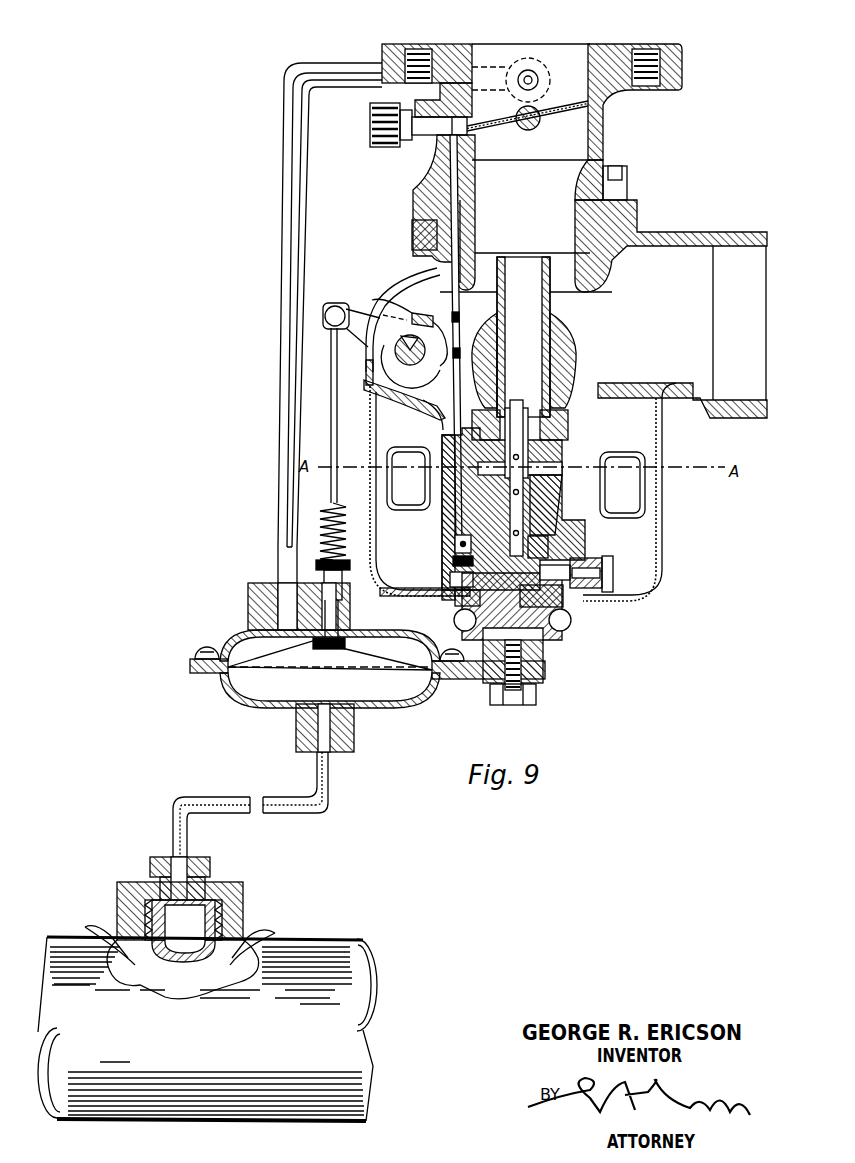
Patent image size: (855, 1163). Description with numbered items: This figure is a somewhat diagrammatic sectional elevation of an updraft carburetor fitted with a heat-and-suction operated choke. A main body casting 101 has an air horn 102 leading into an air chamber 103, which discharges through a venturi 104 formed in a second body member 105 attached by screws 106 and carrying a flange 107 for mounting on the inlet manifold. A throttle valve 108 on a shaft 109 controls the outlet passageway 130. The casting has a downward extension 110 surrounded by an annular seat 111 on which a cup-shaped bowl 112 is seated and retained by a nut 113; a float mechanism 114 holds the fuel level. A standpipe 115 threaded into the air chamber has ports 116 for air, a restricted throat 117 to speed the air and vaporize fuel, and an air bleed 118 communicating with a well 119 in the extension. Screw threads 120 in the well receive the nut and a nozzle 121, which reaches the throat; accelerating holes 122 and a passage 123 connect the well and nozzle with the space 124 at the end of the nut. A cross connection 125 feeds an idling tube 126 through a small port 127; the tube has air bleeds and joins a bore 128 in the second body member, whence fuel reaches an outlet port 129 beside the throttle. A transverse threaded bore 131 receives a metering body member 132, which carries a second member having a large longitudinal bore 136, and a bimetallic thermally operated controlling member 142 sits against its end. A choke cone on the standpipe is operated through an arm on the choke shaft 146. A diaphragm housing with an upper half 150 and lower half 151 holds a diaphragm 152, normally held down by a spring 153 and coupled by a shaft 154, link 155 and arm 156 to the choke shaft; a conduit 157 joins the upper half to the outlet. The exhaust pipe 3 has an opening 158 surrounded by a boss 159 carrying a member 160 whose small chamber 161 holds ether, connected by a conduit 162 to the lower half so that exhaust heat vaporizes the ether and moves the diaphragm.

The exhaust manifold 3 is at (293, 940).
The main body casting 101 is at (648, 233).
The air horn 102 is at (753, 307).
The air chamber 103 is at (662, 325).
The venturi 104 is at (482, 224).
The second body member 105 is at (602, 136).
The screws 106 is at (626, 186).
The flange 107 is at (680, 52).
The throttle valve 108 is at (562, 113).
The throttle shaft 109 is at (520, 128).
The downward extension 110 is at (443, 433).
The annular seat 111 is at (668, 396).
The cup-shaped bowl 112 is at (662, 547).
The nut 113 is at (546, 626).
The float mechanism 114 is at (516, 482).
The standpipe 115 is at (552, 312).
The ports 116 is at (560, 432).
The restricted throat 117 is at (532, 405).
The air bleed 118 is at (553, 456).
The well 119 is at (540, 522).
The screw threads 120 is at (470, 590).
The nozzle 121 is at (555, 507).
The accelerating holes 122 is at (450, 578).
The passage 123 is at (546, 548).
The space between nozzle and end of nut 124 is at (478, 599).
The cross connection 125 is at (455, 546).
The idling tube 126 is at (470, 533).
The small port 127 is at (453, 560).
The air bleeds / bore 128 is at (457, 172).
The outlet port 129 is at (468, 128).
The outlet passageway 130 is at (562, 55).
The transverse threaded bore 131 is at (478, 636).
The body member 132 is at (580, 603).
The longitudinal bore 136 is at (592, 573).
The thermally operated controlling member 142 is at (616, 575).
The choke shaft / arm 146 is at (410, 365).
The upper half of diaphragm housing 150 is at (240, 636).
The lower half of diaphragm housing 151 is at (246, 698).
The diaphragm 152 is at (325, 656).
The spring 153 is at (337, 548).
The shaft 154 is at (333, 451).
The link 155 is at (333, 305).
The arm 156 is at (358, 322).
The conduit 157 is at (283, 373).
The opening 158 is at (180, 962).
The boss 159 is at (125, 913).
The member 160 is at (220, 887).
The chamber 161 is at (183, 931).
The conduit 162 is at (210, 802).